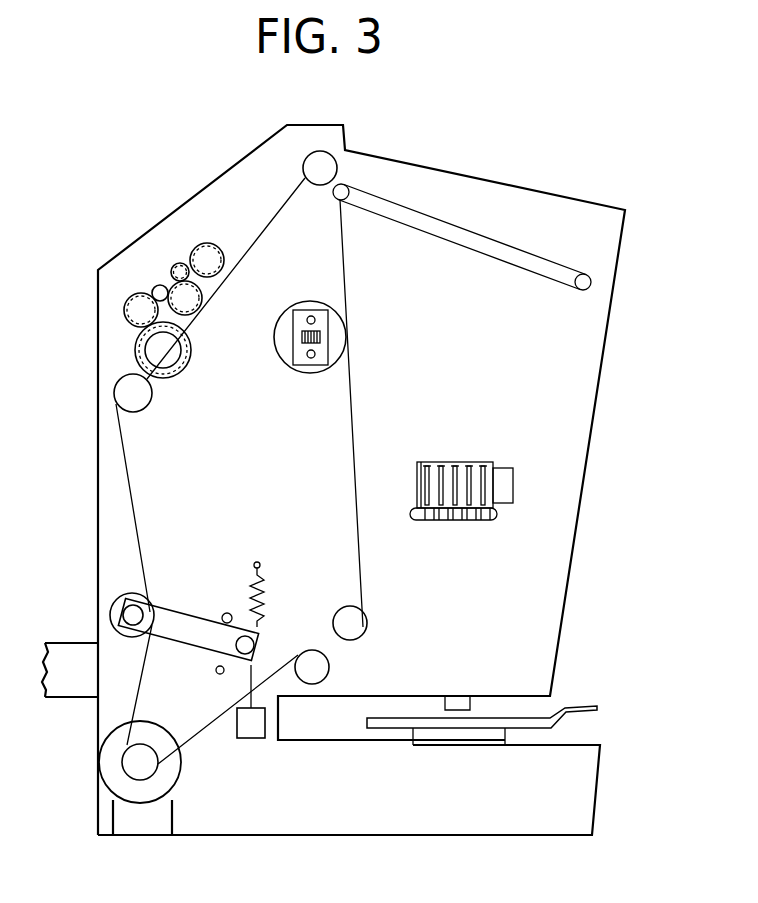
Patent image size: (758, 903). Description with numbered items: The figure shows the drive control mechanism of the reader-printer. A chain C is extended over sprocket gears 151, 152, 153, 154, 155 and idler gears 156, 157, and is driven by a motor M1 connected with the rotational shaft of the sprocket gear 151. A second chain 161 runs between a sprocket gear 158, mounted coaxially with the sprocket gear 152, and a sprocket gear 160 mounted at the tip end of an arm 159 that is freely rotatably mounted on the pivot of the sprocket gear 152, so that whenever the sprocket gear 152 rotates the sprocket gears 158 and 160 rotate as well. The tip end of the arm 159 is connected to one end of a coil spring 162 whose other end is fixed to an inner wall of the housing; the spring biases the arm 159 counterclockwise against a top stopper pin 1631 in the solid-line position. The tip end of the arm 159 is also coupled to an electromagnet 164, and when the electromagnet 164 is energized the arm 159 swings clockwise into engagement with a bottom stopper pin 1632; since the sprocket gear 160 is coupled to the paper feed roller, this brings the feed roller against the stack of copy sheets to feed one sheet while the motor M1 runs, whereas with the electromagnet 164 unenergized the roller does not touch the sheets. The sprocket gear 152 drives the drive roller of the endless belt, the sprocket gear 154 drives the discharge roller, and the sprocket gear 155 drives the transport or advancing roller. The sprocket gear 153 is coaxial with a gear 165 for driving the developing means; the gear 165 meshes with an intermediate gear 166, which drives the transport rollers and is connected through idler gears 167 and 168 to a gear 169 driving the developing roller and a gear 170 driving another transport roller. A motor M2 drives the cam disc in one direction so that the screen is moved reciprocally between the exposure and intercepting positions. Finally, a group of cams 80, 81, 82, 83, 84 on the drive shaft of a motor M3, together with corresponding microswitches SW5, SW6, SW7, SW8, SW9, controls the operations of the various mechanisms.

The chain C is at (355, 375).
The cam 80 is at (427, 462).
The cam 81 is at (441, 462).
The cam 82 is at (455, 462).
The cam 83 is at (469, 462).
The cam 84 is at (483, 462).
The motor M1 is at (175, 790).
The motor M2 is at (311, 310).
The motor M3 is at (513, 480).
The microswitch SW5 is at (425, 520).
The microswitch SW6 is at (439, 520).
The microswitch SW7 is at (453, 520).
The microswitch SW8 is at (467, 520).
The microswitch SW9 is at (483, 520).
The sprocket gear 151 is at (158, 758).
The sprocket gear 152 is at (150, 598).
The sprocket gear 153 is at (165, 362).
The sprocket gear 154 is at (317, 178).
The sprocket gear 155 is at (329, 667).
The idler gear 156 is at (137, 403).
The idler gear 157 is at (350, 607).
The sprocket gear 158 is at (143, 613).
The arm 159 is at (226, 612).
The sprocket gear 160 is at (258, 643).
The chain 161 is at (170, 633).
The coil spring 162 is at (262, 591).
The top stopper pin 1631 is at (252, 563).
The bottom stopper pin 1632 is at (222, 674).
The electromagnet 164 is at (255, 738).
The gear 165 is at (190, 353).
The intermediate gear 166 is at (133, 306).
The idler gear 167 is at (159, 285).
The idler gear 168 is at (181, 264).
The gear 169 is at (200, 305).
The gear 170 is at (212, 252).